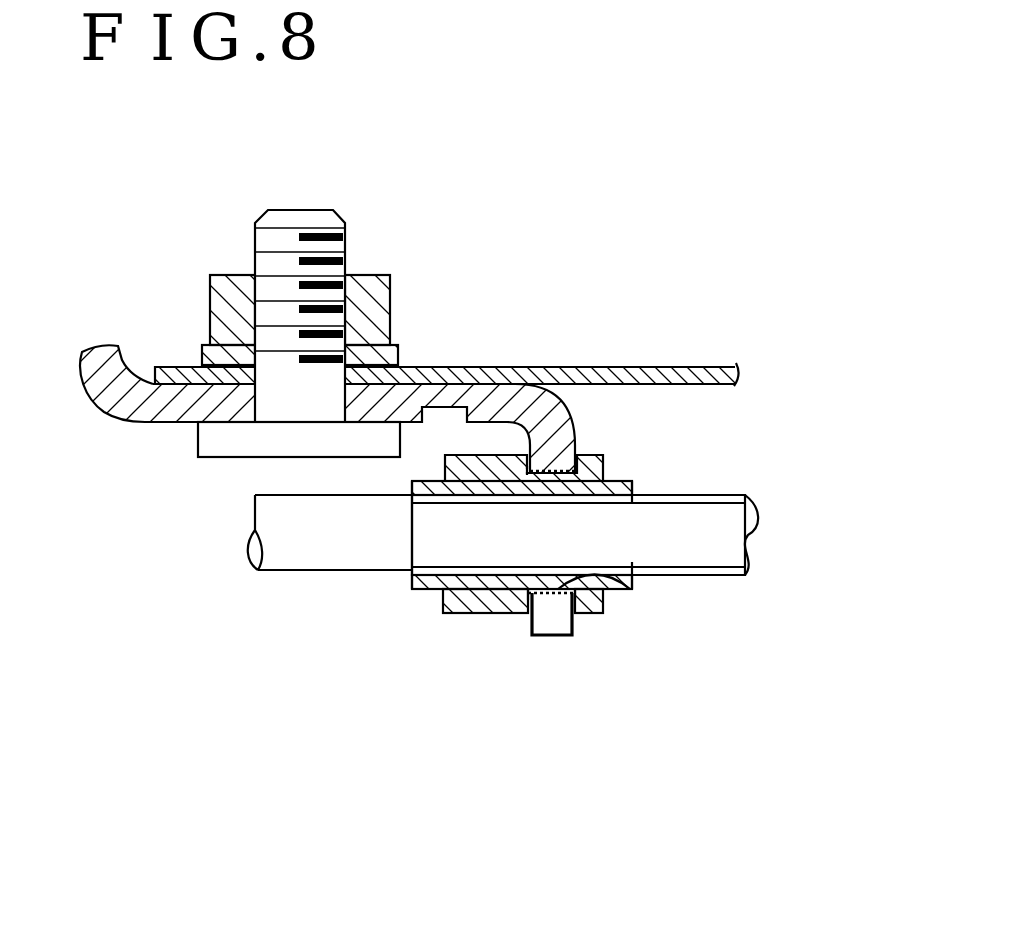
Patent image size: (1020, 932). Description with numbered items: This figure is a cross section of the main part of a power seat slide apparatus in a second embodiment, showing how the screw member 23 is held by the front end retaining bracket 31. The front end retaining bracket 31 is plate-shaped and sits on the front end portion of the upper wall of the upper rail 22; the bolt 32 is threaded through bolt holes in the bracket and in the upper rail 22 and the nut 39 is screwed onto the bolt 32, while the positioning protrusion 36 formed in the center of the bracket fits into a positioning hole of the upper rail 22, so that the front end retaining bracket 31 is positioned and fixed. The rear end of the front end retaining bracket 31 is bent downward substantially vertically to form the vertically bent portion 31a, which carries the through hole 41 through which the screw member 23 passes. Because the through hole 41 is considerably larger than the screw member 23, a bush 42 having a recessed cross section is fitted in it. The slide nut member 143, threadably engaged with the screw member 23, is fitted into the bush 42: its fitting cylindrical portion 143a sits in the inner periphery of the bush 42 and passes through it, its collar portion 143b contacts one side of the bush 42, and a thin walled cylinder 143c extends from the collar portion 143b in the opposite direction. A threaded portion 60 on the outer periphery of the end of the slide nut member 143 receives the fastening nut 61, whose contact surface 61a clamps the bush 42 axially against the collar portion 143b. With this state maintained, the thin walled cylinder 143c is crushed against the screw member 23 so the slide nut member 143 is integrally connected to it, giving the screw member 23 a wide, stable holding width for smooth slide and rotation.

The upper rail 22 is at (675, 370).
The screw member 23 is at (720, 553).
The front end retaining bracket 31 is at (120, 415).
The vertically bent portion 31a is at (545, 637).
The bolt 32 is at (240, 443).
The positioning protrusion 36 is at (438, 373).
The nut 39 is at (372, 283).
The through hole 41 is at (625, 573).
The bush 42 is at (573, 468).
The threaded portion 60 is at (418, 590).
The fastening nut 61 is at (472, 613).
The contact surface 61a is at (530, 613).
The slide nut member 143 is at (608, 438).
The fitting cylindrical portion 143a is at (547, 471).
The collar portion 143b is at (585, 613).
The thin walled cylinder 143c is at (622, 484).